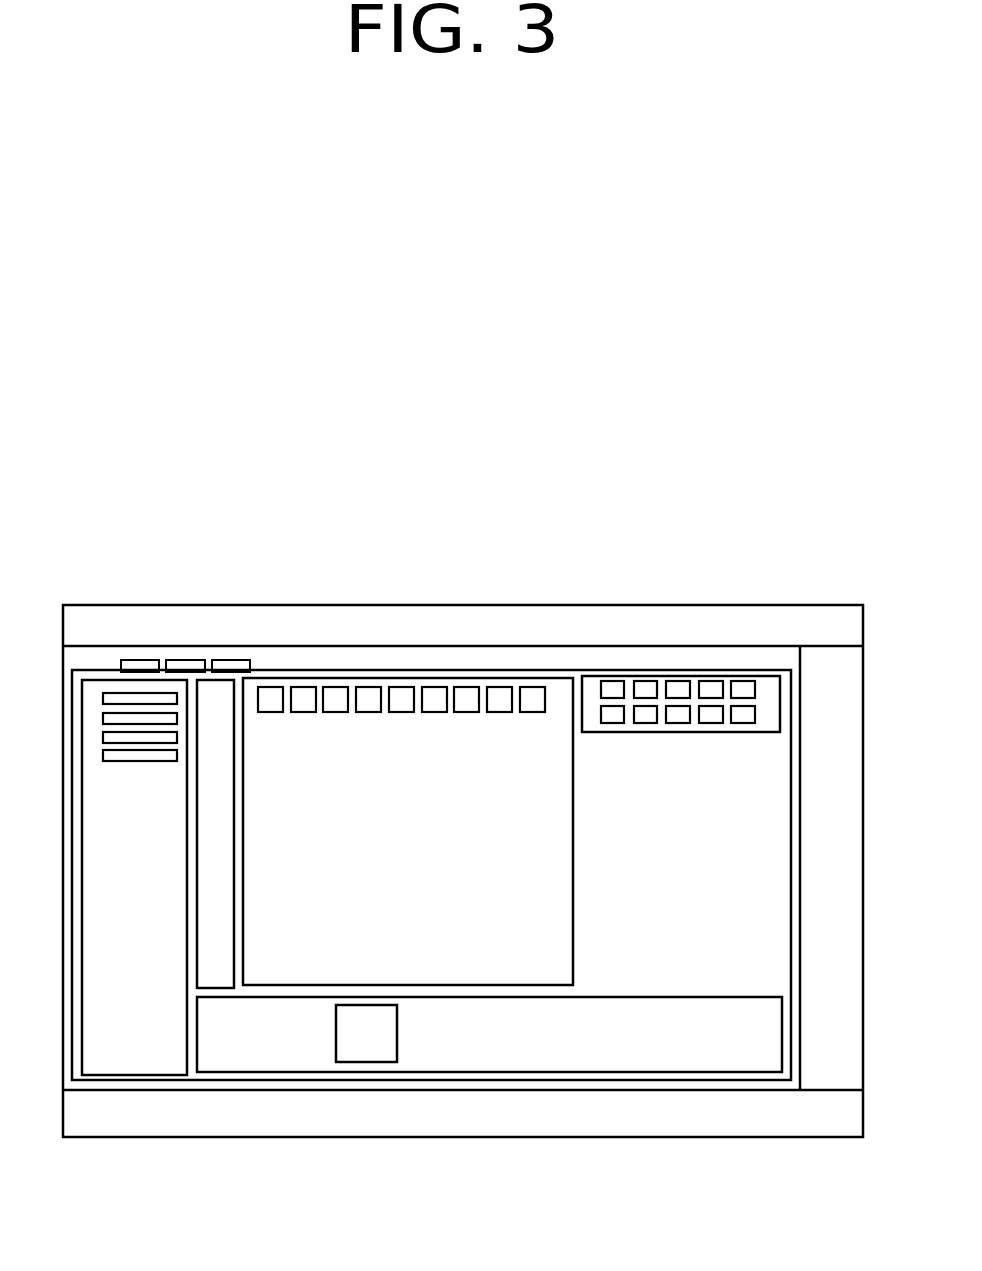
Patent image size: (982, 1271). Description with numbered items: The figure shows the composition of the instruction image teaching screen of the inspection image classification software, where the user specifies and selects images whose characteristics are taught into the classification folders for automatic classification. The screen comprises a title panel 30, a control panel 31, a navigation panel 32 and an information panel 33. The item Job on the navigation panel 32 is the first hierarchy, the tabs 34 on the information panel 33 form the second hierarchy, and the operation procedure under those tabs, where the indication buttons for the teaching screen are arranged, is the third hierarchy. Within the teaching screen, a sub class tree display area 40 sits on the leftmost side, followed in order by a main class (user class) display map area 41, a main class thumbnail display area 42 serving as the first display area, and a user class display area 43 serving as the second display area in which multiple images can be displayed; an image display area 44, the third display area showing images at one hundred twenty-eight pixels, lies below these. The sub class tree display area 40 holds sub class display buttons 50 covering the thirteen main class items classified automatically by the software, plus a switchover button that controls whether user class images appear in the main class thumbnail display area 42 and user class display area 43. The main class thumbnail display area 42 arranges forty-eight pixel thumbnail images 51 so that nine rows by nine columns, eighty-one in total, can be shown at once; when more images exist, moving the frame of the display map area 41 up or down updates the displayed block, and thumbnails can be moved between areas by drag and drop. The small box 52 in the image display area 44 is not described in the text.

The title panel 30 is at (587, 623).
The control panel 31 is at (823, 663).
The navigation panel 32 is at (537, 1103).
The information panel 33 is at (497, 657).
The tabs 34 is at (85, 660).
The sub class tree display area 40 is at (138, 688).
The main class (user class) display map area 41 is at (217, 753).
The main class thumbnail display area 42 is at (397, 743).
The user class display area 43 is at (677, 677).
The image display area 44 is at (305, 1027).
The sub class display buttons 50 is at (115, 720).
The thumbnail images 51 is at (277, 687).
The indicator box 52 is at (368, 1047).